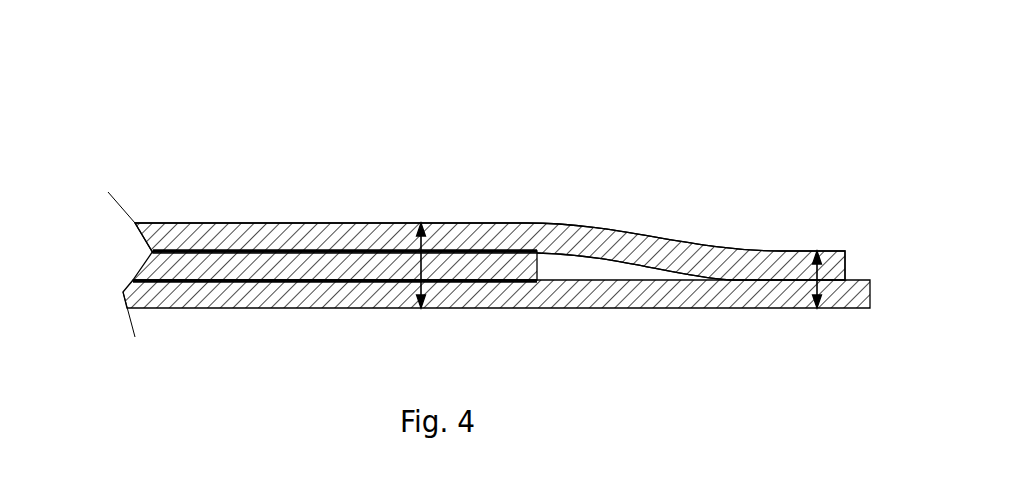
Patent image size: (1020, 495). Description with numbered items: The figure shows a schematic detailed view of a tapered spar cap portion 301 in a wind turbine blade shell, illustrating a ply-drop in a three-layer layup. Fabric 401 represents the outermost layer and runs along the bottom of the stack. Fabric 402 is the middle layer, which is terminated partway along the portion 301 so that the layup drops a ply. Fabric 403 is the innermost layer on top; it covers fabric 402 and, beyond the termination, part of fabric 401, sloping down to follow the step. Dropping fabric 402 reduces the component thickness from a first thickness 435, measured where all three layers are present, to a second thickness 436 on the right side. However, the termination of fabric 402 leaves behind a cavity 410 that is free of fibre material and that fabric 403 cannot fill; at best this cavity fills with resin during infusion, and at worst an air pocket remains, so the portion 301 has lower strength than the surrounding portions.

The portion 301 is at (175, 85).
The fabric 401 is at (310, 295).
The fabric 402 is at (222, 265).
The fabric 403 is at (490, 215).
The cavity 410 is at (577, 270).
The first thickness 435 is at (423, 240).
The second thickness 436 is at (822, 268).